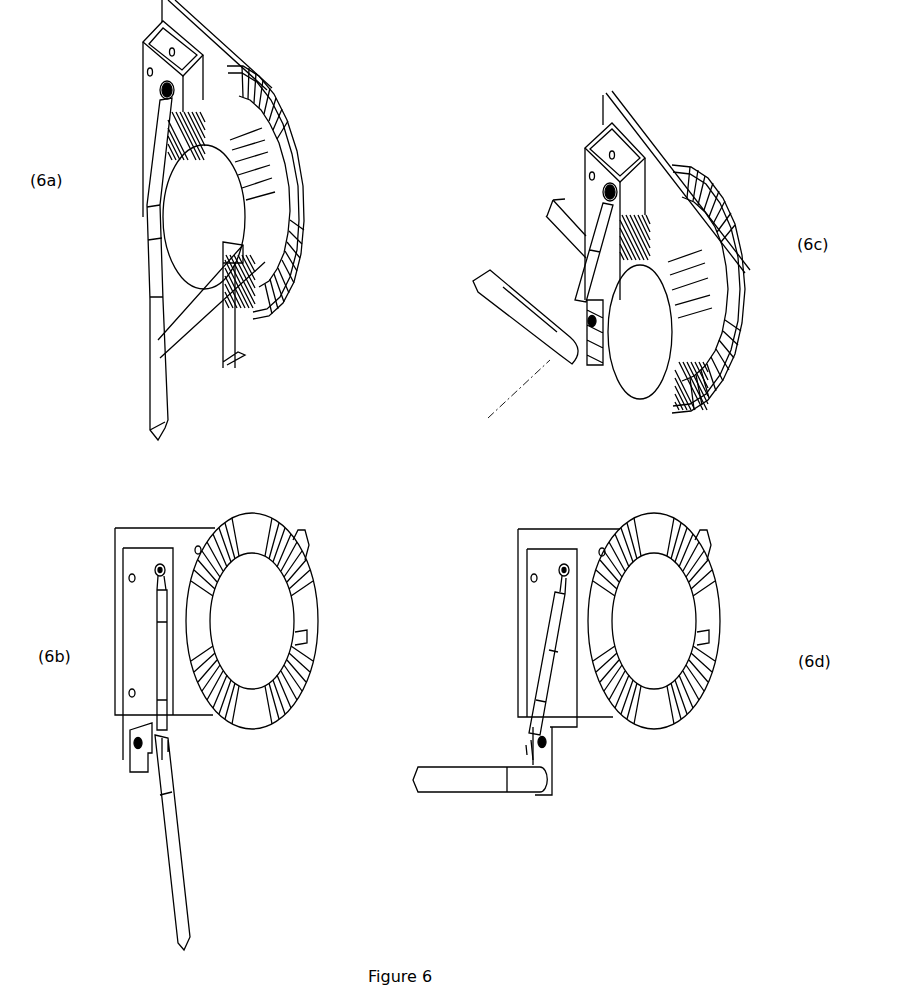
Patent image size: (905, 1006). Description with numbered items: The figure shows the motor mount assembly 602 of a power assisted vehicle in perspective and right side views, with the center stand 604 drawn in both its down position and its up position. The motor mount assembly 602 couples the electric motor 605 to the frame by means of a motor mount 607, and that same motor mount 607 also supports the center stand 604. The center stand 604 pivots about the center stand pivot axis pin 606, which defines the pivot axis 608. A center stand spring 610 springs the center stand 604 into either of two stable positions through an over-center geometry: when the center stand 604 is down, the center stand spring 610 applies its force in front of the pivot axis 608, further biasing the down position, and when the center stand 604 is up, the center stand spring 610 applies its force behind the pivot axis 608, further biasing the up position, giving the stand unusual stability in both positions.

In FIG. 6A, the motor mount assembly 602 is at (290, 118).
In FIG. 6C, the motor mount assembly 602 is at (727, 205).
In FIG. 6A, the center stand 604 is at (158, 337).
In FIG. 6C, the center stand 604 is at (505, 297).
In FIG. 6B, the center stand 604 is at (172, 840).
In FIG. 6D, the center stand 604 is at (480, 778).
In FIG. 6B, the electric motor 605 is at (253, 617).
In FIG. 6D, the electric motor 605 is at (650, 622).
In FIG. 6B, the center stand pivot axis pin 606 is at (133, 772).
In FIG. 6D, the center stand pivot axis pin 606 is at (543, 752).
In FIG. 6B, the motor mount 607 is at (182, 553).
In FIG. 6D, the motor mount 607 is at (587, 555).
In FIG. 6C, the pivot axis 608 is at (528, 380).
In FIG. 6B, the center stand spring 610 is at (160, 665).
In FIG. 6D, the center stand spring 610 is at (548, 672).